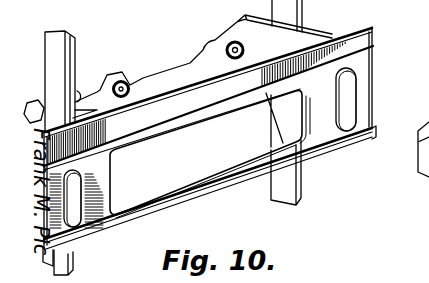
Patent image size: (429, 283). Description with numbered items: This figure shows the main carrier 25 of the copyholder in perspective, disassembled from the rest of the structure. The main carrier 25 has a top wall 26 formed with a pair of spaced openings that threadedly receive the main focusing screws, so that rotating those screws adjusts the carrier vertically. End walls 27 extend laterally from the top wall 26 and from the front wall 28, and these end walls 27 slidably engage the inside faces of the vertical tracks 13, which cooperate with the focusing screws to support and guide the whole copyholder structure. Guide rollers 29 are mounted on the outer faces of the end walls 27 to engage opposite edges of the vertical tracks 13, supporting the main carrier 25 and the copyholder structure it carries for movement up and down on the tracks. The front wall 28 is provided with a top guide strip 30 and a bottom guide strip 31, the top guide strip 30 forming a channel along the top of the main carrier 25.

The vertical tracks 13 is at (62, 67).
The main carrier 25 is at (223, 138).
The top wall 26 is at (173, 73).
The end walls 27 is at (80, 113).
The front wall 28 is at (362, 84).
The guide rollers 29 is at (28, 104).
The top guide strip 30 is at (360, 44).
The bottom guide strip 31 is at (368, 138).